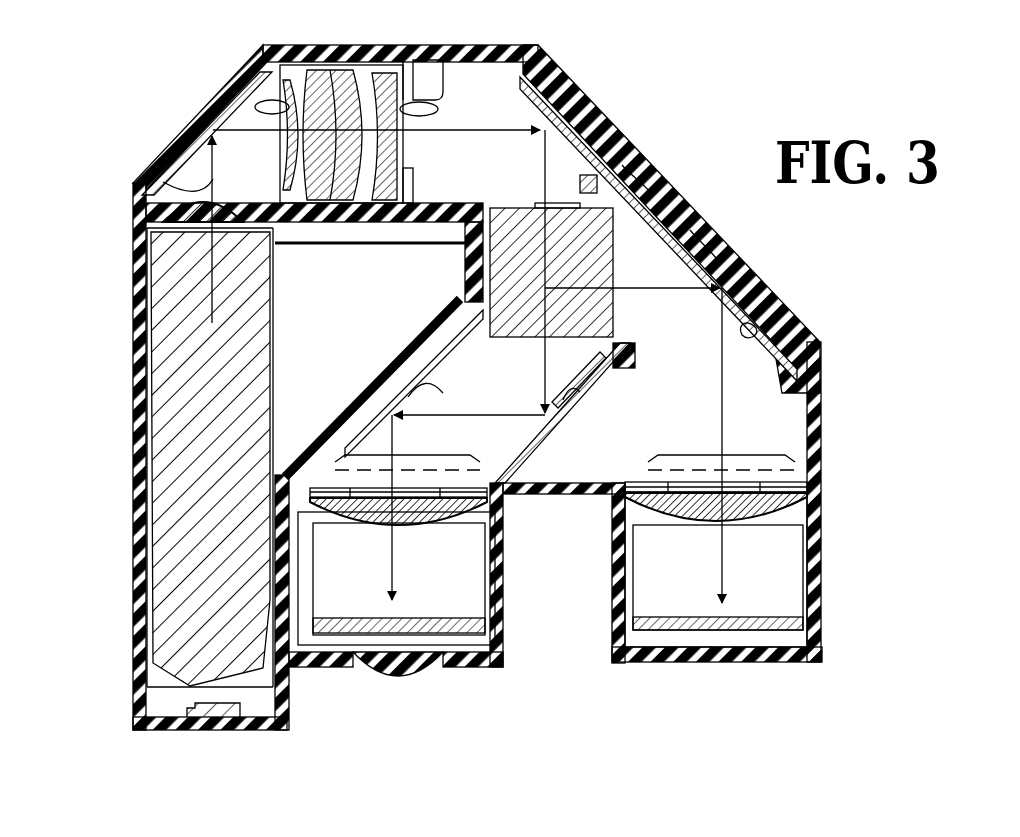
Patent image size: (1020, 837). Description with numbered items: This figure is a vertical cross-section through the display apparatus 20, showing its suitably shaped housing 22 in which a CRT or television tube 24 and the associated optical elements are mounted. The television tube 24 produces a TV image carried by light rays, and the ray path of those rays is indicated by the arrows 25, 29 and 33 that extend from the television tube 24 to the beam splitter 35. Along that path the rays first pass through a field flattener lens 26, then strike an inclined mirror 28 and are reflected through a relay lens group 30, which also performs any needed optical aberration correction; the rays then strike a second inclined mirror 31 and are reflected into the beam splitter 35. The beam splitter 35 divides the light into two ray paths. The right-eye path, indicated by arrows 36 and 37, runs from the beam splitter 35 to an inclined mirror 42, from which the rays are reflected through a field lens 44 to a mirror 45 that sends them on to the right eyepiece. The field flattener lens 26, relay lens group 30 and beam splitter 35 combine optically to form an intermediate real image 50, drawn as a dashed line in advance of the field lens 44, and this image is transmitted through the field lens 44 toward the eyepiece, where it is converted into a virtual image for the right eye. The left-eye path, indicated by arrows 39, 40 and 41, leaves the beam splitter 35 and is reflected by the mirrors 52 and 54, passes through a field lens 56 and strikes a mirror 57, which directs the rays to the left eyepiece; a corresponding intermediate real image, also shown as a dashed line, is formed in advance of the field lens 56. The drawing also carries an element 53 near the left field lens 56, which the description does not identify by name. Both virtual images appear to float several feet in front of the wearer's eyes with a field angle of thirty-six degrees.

The display apparatus 20 is at (695, 193).
The housing 22 is at (748, 268).
The television tube 24 is at (170, 395).
The arrow 25 is at (150, 175).
The field flattener lens 26 is at (148, 210).
The inclined mirror 28 is at (225, 95).
The arrow 29 is at (520, 150).
The relay lens group 30 is at (435, 90).
The inclined mirror 31 is at (538, 50).
The arrow 33 is at (570, 176).
The beam splitter 35 is at (615, 248).
The arrow 36 is at (645, 288).
The arrow 37 is at (722, 400).
The arrow 39 is at (455, 318).
The arrow 40 is at (503, 417).
The arrow 41 is at (486, 588).
The inclined mirror 42 is at (757, 330).
The field lens 44 is at (780, 530).
The mirror 45 is at (782, 598).
The intermediate real image 50 is at (715, 452).
The mirror 52 is at (560, 433).
The lens retainer 53 is at (532, 480).
The mirror 54 is at (402, 385).
The field lens 56 is at (445, 533).
The mirror 57 is at (455, 600).